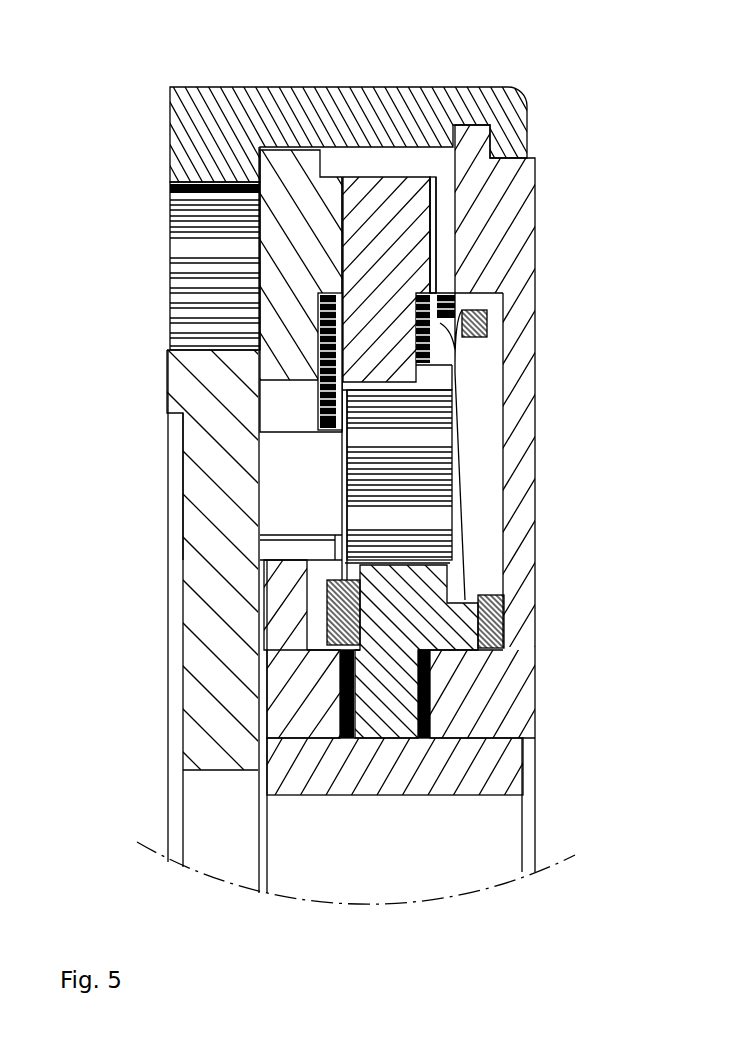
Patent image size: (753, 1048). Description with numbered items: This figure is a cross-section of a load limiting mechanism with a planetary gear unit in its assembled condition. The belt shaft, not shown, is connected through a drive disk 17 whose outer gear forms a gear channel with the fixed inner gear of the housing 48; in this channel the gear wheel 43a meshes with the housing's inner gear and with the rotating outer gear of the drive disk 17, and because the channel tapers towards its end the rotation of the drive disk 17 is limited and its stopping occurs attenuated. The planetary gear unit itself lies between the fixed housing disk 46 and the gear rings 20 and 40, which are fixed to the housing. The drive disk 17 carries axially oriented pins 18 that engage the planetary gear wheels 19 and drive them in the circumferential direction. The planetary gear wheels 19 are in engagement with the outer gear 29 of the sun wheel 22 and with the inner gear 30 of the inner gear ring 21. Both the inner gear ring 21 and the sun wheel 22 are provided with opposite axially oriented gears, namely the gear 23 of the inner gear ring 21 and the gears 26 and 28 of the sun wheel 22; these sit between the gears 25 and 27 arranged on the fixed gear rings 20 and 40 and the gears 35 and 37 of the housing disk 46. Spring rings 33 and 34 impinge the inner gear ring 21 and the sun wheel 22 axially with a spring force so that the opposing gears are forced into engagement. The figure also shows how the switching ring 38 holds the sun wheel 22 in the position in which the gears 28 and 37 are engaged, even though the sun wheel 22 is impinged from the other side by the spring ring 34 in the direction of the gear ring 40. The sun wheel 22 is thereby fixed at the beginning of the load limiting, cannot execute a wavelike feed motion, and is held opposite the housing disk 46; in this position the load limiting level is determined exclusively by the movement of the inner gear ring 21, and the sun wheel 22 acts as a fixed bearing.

The housing 48 is at (268, 113).
The gear 25 is at (334, 230).
The inner gear ring 21 is at (432, 220).
The gear 23 is at (446, 244).
The housing disk 46 is at (513, 214).
The gear 35 is at (447, 262).
The spring ring 33 is at (463, 347).
The planetary gear wheel 19 is at (432, 430).
The outer gear 29 is at (450, 540).
The sun wheel 22 is at (420, 597).
The spring ring 34 is at (467, 627).
The gear 37 is at (432, 722).
The gear 28 is at (425, 728).
The gear 26 is at (358, 730).
The gear 27 is at (340, 712).
The gear ring 40 is at (300, 703).
The switching ring 38 is at (328, 638).
The drive disk 17 is at (217, 537).
The pin 18 is at (297, 483).
The inner gear 30 is at (318, 387).
The gear wheel 43a is at (195, 272).
The gear ring 20 is at (290, 238).